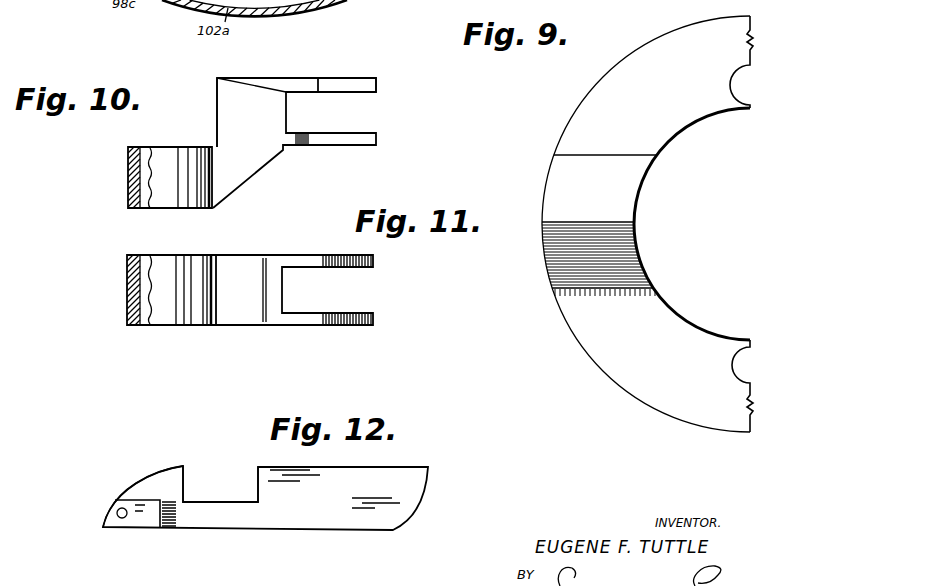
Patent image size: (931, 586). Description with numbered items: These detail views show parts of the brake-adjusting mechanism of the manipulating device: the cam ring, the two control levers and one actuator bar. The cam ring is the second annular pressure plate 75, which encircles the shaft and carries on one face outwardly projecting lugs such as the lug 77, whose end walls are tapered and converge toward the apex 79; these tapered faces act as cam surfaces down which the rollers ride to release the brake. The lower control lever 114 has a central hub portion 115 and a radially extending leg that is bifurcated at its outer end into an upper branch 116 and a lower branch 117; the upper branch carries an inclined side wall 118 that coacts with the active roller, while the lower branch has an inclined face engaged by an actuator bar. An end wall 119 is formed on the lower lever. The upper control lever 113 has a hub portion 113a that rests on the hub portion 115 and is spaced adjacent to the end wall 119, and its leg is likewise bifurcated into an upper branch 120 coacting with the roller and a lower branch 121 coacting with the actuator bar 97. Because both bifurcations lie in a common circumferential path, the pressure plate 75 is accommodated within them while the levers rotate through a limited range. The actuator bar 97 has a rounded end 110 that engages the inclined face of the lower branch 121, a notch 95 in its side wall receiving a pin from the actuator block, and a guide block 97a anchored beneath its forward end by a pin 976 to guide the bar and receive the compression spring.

In FIG. 9, the annular pressure plate 75 is at (620, 92).
In FIG. 9, the lug 77 is at (575, 180).
In FIG. 9, the apex 79 is at (562, 222).
In FIG. 10, the lower control lever 114 is at (243, 100).
In FIG. 10, the hub portion 115 is at (172, 160).
In FIG. 10, the upper branch 116 is at (303, 62).
In FIG. 10, the lower branch 117 is at (318, 130).
In FIG. 10, the inclined side wall 118 is at (355, 87).
In FIG. 10, the end wall 119 is at (217, 117).
In FIG. 11, the hub portion 113a is at (177, 265).
In FIG. 11, the upper control lever 113 is at (233, 254).
In FIG. 11, the upper branch 120 is at (292, 254).
In FIG. 11, the lower branch 121 is at (338, 310).
In FIG. 12, the actuator bar 97 is at (310, 516).
In FIG. 12, the rounded end 110 is at (142, 482).
In FIG. 12, the notch 95 is at (258, 475).
In FIG. 12, the guide block 97a is at (150, 520).
In FIG. 12, the pivot hole 976 is at (122, 518).